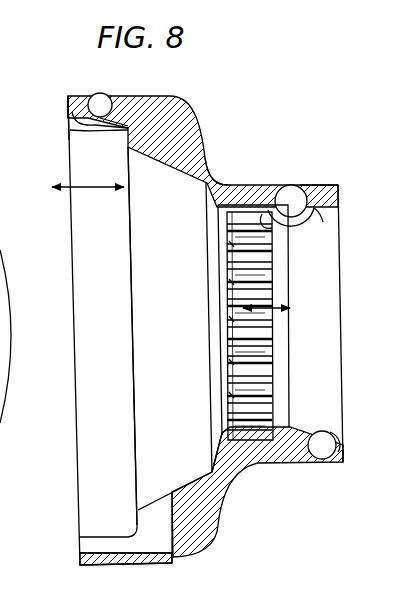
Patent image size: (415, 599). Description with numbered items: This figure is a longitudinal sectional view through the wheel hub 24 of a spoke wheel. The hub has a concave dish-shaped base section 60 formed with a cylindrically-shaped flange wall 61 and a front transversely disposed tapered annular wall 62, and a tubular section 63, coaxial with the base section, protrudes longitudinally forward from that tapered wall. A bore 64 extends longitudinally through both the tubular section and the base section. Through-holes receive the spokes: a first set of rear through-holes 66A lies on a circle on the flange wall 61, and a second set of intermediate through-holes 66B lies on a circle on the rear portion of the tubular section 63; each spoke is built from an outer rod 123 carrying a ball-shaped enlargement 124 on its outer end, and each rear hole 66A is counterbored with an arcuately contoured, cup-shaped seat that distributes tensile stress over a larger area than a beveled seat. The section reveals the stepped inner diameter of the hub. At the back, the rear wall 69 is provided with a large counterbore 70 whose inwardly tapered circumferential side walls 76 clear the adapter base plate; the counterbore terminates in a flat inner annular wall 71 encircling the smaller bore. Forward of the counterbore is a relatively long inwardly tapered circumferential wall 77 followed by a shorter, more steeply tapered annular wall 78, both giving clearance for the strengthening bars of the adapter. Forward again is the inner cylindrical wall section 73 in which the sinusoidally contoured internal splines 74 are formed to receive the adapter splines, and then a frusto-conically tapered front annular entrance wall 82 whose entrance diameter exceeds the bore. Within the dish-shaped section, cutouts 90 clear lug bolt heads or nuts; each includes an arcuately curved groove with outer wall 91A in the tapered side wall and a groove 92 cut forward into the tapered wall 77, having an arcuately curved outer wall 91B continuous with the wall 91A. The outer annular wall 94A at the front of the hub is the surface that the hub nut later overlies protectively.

The wheel hub 24 is at (241, 150).
The base section 60 is at (173, 96).
The flange wall 61 is at (84, 96).
The front tapered annular wall 62 is at (230, 178).
The tubular section 63 is at (333, 184).
The bore 64 is at (275, 326).
The rear through-holes 66A is at (108, 111).
The intermediate through-holes 66B is at (287, 184).
The rear wall 69 is at (70, 113).
The counterbore 70 is at (71, 189).
The inner annular wall 71 is at (115, 125).
The inner cylindrical wall section 73 is at (235, 470).
The splines 74 is at (290, 262).
The tapered circumferential side walls 76 is at (80, 123).
The inwardly tapered circumferential wall 77 is at (176, 153).
The tapered annular wall 78 is at (206, 192).
The front annular entrance wall 82 is at (323, 221).
The cutouts 90 is at (93, 540).
The outer arcuately curved wall 91A is at (113, 553).
The arcuately curved outer wall 91B is at (150, 552).
The groove 92 is at (164, 508).
The outer annular wall 94A is at (346, 452).
The outer rod 123 is at (105, 129).
The ball-shaped enlargement 124 is at (264, 214).